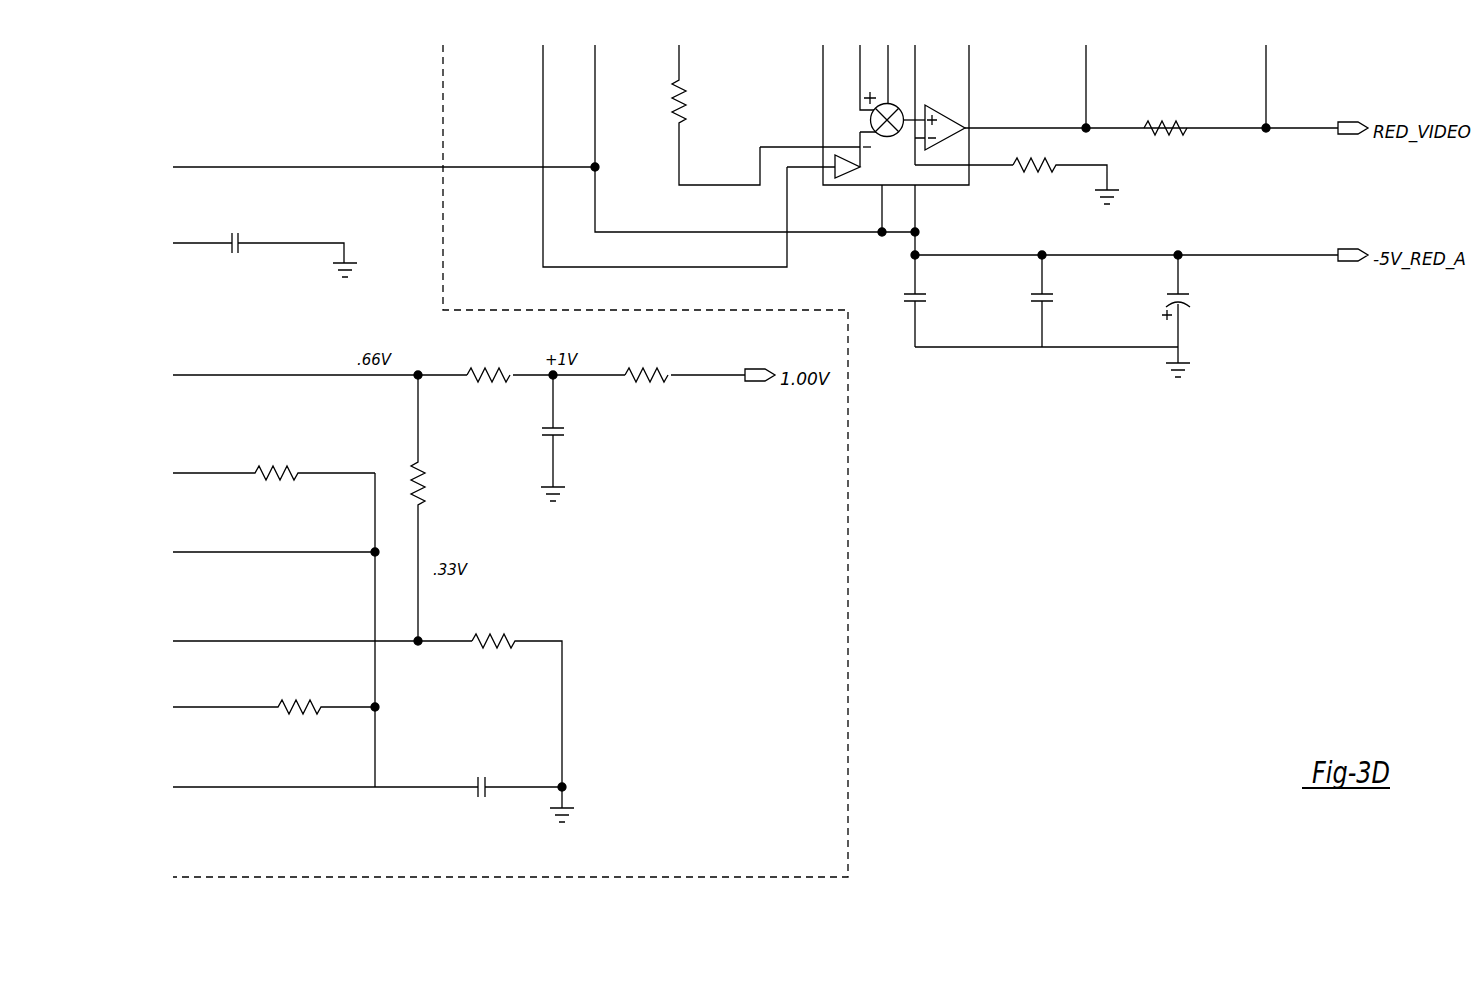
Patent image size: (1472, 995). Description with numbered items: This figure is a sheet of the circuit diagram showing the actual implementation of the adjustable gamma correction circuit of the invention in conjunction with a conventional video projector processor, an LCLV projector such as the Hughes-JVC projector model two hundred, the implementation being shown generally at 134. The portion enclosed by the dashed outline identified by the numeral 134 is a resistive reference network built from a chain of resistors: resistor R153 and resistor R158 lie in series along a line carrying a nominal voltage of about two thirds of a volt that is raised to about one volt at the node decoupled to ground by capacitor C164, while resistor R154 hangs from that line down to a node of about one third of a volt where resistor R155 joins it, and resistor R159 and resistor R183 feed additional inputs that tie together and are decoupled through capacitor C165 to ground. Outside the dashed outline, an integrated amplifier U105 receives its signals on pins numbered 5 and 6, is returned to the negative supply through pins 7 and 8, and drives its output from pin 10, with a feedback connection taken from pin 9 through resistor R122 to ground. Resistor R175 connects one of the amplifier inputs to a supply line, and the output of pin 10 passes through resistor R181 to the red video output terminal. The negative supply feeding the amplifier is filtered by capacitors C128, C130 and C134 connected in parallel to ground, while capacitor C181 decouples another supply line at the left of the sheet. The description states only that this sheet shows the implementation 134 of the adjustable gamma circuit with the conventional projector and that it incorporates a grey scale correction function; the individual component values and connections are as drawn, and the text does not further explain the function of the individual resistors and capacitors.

The adjustable gamma circuit implementation 134 is at (847, 601).
The U105 pin 5 inverting multiplier input 5 is at (810, 140).
The U105 pin 6 buffer input 6 is at (811, 162).
The U105 pin 7 VEE 7 is at (874, 208).
The U105 pin 8 VEE 8 is at (907, 220).
The U105 pin 9 feedback 9 is at (964, 157).
The U105 pin 10 output 10 is at (1025, 120).
The CLC522 variable gain amplifier U105 is at (904, 137).
The resistor 374 ohm R175 is at (716, 115).
The output resistor 75 ohm R181 is at (1166, 139).
The feedback resistor 47 ohm R122 is at (1066, 171).
The resistor 330 ohm R153 is at (488, 375).
The resistor 330 ohm R154 is at (441, 508).
The resistor 10 ohm R158 is at (648, 374).
The resistor 39K R159 is at (274, 473).
The resistor 330 ohm R155 is at (517, 700).
The resistor 39K R183 is at (274, 708).
The capacitor 0.1uF C181 is at (265, 257).
The capacitor 0.1uF C128 is at (938, 301).
The capacitor 0.1uF C130 is at (1065, 301).
The capacitor 22uF C134 is at (1197, 301).
The capacitor 0.1uF C164 is at (574, 438).
The capacitor 0.1uF C165 is at (521, 802).